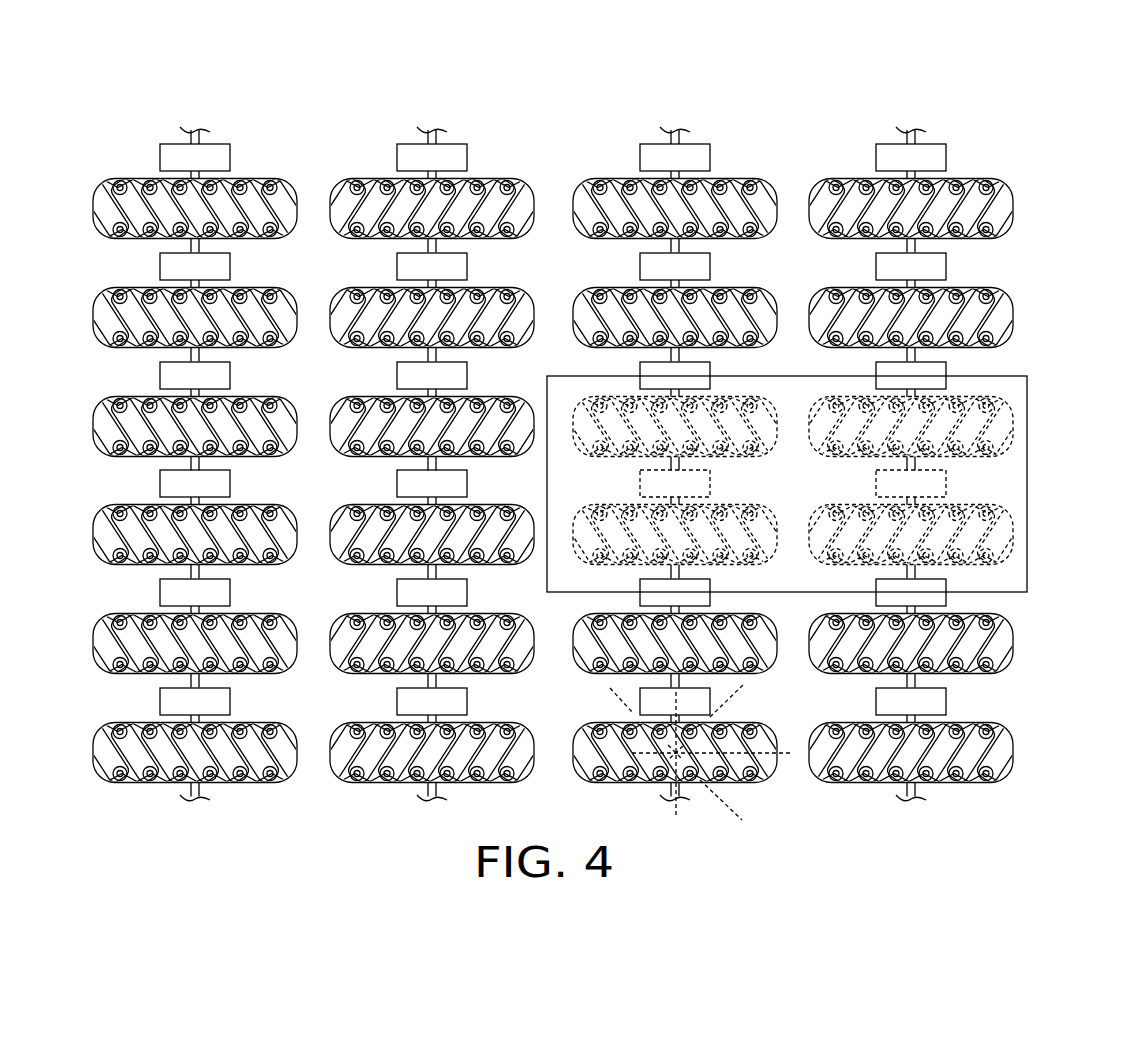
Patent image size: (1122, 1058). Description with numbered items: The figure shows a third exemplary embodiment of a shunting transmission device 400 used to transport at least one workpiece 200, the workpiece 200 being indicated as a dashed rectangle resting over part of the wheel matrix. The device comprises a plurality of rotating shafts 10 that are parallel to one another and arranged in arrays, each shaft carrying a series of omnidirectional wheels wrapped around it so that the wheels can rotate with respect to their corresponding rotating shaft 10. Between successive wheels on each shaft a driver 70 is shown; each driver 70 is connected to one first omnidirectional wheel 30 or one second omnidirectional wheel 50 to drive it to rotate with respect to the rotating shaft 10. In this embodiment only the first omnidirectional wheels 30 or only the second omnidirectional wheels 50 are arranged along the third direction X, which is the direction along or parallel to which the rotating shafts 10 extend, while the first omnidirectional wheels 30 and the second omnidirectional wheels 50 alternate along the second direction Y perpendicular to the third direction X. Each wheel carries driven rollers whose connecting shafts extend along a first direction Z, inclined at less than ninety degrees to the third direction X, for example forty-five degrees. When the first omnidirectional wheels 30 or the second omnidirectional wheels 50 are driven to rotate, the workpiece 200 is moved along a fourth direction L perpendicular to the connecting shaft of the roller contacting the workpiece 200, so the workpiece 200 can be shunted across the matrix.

The shunting transmission device 400 is at (590, 92).
The rotating shaft 10 is at (200, 130).
The driver 70 is at (408, 152).
The first omnidirectional wheel 30 is at (575, 481).
The second omnidirectional wheel 50 is at (585, 643).
The workpiece 200 is at (1003, 376).
The fourth direction L is at (737, 695).
The third direction X is at (673, 808).
The second direction Y is at (790, 753).
The first direction Z is at (745, 816).